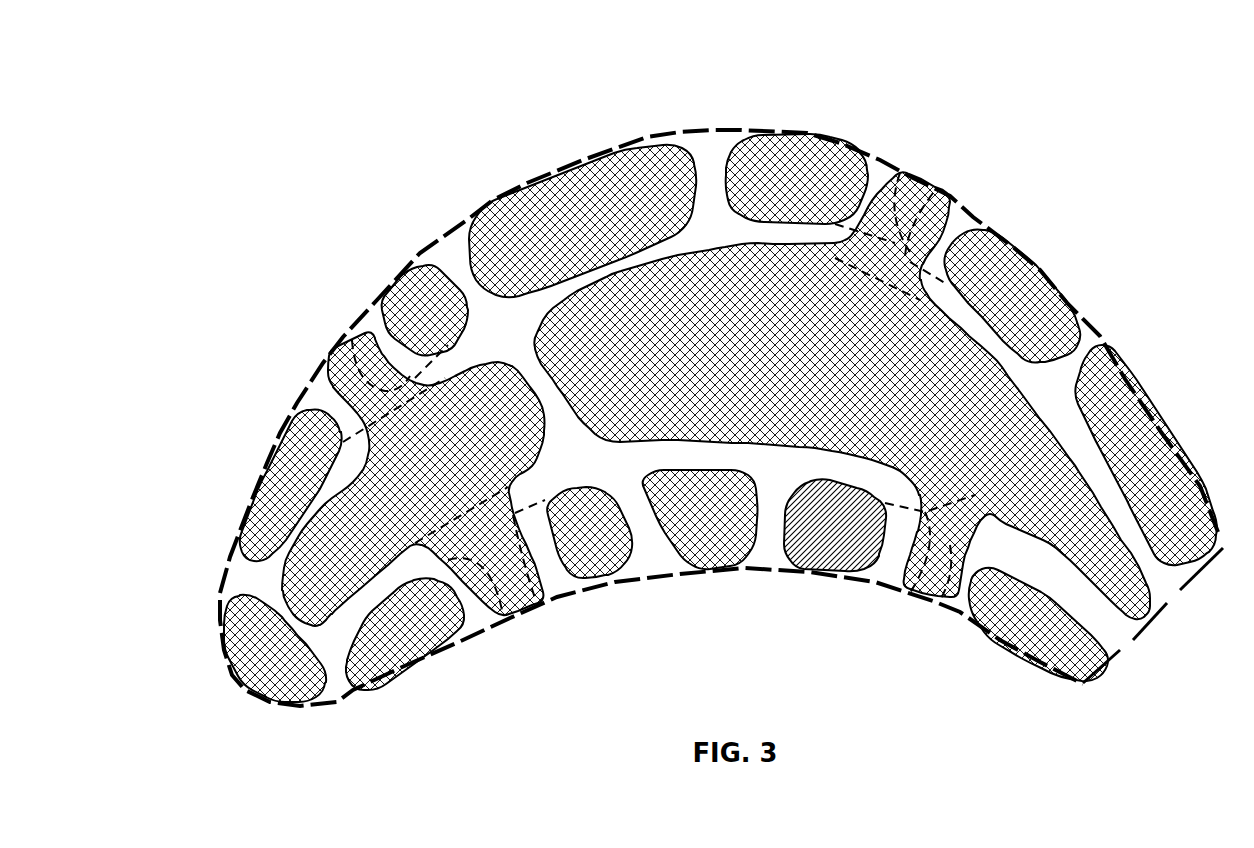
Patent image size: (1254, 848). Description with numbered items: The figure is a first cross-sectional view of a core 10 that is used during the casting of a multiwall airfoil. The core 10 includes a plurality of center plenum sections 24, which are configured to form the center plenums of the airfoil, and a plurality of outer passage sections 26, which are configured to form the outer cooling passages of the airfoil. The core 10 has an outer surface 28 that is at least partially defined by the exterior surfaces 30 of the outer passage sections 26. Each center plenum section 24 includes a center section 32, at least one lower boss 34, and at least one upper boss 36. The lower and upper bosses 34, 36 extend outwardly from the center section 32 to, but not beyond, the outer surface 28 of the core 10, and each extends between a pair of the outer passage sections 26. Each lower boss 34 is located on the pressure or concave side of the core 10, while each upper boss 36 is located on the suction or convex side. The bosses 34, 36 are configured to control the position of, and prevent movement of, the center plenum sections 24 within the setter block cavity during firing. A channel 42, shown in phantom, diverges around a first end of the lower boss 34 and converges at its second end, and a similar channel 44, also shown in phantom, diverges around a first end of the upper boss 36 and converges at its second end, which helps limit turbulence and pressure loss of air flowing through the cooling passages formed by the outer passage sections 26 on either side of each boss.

The core 10 is at (307, 138).
The center plenum section 24 is at (713, 240).
The outer passage section 26 is at (571, 233).
The outer surface 28 is at (1038, 268).
The exterior surface 30 is at (1062, 303).
The center section 32 is at (769, 363).
The lower boss 34 is at (915, 600).
The upper boss 36 is at (932, 178).
The channel 42 is at (494, 558).
The channel 44 is at (894, 238).